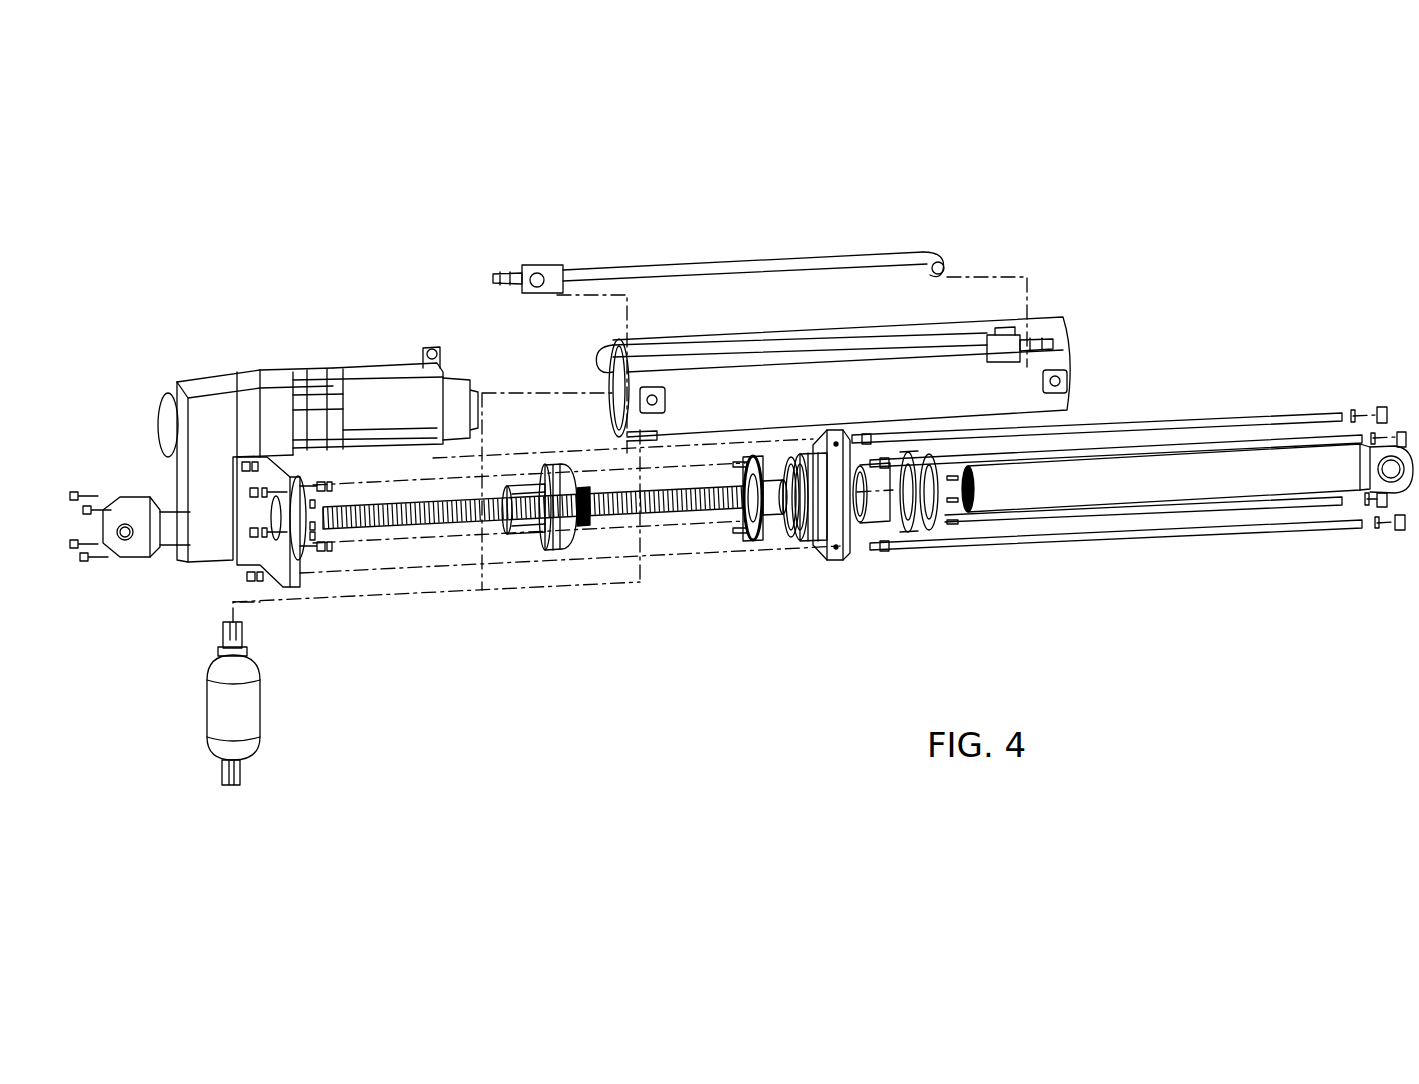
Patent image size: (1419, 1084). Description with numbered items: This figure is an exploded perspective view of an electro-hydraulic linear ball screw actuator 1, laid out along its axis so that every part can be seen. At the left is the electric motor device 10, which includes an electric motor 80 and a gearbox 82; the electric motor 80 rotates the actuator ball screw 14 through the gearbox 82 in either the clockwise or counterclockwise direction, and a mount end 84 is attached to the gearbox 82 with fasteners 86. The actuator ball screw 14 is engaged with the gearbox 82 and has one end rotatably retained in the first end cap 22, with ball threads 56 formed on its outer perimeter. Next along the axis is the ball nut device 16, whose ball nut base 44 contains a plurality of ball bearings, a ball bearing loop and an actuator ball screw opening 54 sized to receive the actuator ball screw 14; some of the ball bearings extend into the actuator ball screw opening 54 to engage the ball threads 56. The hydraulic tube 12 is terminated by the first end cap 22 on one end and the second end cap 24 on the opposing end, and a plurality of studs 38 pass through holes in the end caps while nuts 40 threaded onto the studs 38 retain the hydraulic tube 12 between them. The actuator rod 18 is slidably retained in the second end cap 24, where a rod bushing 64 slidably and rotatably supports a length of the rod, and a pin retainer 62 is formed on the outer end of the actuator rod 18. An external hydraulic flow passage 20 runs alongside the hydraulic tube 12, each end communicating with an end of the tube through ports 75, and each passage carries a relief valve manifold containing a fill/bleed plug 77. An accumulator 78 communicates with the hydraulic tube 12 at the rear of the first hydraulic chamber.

The electro-hydraulic linear ball screw actuator 1 is at (643, 672).
The electric motor device 10 is at (323, 342).
The hydraulic tube 12 is at (790, 331).
The actuator ball screw 14 is at (687, 513).
The ball nut device 16 is at (543, 457).
The actuator rod 18 is at (1267, 482).
The external hydraulic flow passage 20 is at (797, 257).
The first end cap 22 is at (287, 583).
The second end cap 24 is at (843, 560).
The studs 38 is at (1160, 533).
The nuts 40 is at (1400, 533).
The ball nut base 44 is at (530, 527).
The actuator ball screw opening 54 is at (510, 527).
The ball threads 56 is at (453, 525).
The pin retainer 62 is at (1383, 446).
The rod bushing 64 is at (877, 517).
The ports 75 is at (1068, 382).
The fill/bleed plug 77 is at (503, 270).
The accumulator 78 is at (243, 747).
The electric motor 80 is at (388, 362).
The gearbox 82 is at (197, 380).
The mount end 84 is at (132, 557).
The fasteners 86 is at (80, 493).